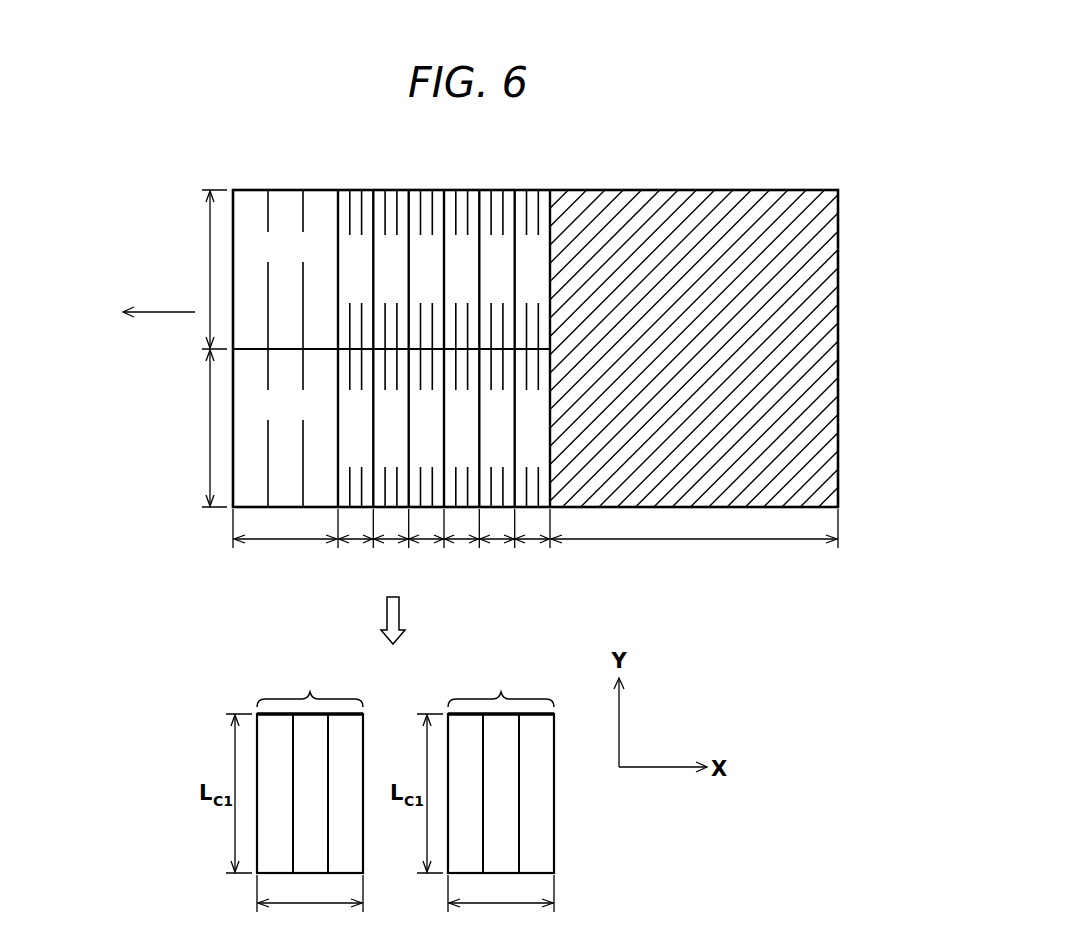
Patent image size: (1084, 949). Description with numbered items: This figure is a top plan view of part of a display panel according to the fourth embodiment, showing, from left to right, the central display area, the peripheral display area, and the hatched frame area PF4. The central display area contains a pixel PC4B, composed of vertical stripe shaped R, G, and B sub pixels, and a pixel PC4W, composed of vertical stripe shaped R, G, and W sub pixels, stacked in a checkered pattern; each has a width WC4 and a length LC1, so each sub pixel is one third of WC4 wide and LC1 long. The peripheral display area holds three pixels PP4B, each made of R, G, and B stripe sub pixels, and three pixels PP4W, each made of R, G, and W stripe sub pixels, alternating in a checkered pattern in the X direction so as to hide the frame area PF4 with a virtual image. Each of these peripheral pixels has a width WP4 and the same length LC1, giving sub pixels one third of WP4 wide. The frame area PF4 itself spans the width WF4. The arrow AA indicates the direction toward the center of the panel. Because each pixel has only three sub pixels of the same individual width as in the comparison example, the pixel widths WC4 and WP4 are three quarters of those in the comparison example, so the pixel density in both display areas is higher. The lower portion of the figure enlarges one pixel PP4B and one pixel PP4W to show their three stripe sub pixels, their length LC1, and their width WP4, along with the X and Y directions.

The frame area PF4 is at (683, 200).
The pixel PC4B is at (285, 269).
The pixel PC4W is at (287, 428).
The pixel PP4B is at (444, 348).
The pixel PP4W is at (444, 348).
The direction AA is at (159, 301).
The length LC1 is at (202, 348).
The width WC4 is at (285, 542).
The width WP4 is at (405, 723).
The frame width WF4 is at (694, 542).